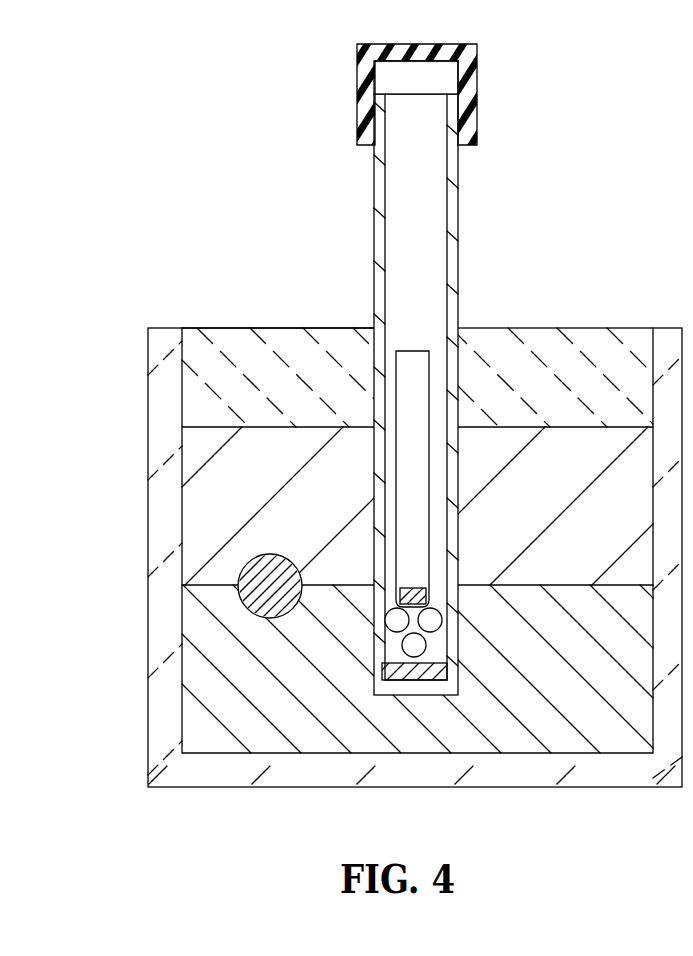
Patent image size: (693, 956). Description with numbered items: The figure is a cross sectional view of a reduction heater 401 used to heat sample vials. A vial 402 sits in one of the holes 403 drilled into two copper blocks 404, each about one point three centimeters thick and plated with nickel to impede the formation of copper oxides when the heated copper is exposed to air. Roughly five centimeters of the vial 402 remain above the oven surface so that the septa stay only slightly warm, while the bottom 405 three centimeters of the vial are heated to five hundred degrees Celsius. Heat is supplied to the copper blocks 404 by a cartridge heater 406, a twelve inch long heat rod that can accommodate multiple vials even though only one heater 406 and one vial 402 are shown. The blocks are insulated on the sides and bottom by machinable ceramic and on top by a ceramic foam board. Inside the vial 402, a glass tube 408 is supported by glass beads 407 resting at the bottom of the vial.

The reduction heater 401 is at (533, 296).
The vial 402 is at (458, 202).
The holes 403 is at (374, 350).
The copper blocks 404 is at (272, 478).
The bottom of the vial 405 is at (413, 668).
The cartridge heater 406 is at (283, 553).
The glass beads 407 is at (430, 618).
The glass tube 408 is at (413, 470).